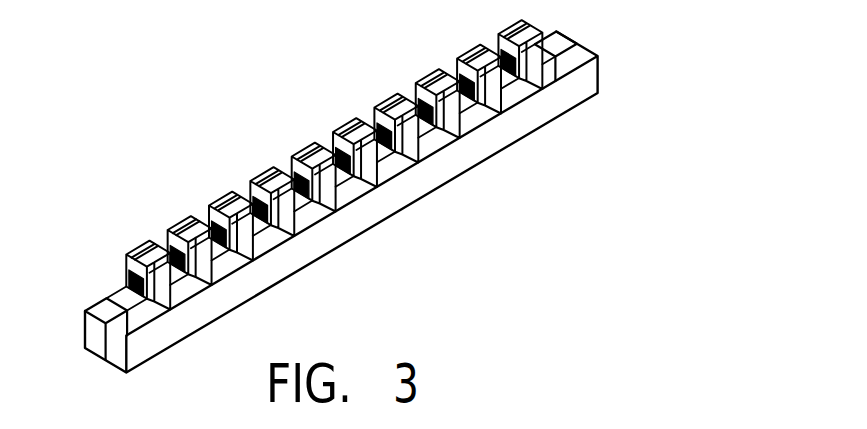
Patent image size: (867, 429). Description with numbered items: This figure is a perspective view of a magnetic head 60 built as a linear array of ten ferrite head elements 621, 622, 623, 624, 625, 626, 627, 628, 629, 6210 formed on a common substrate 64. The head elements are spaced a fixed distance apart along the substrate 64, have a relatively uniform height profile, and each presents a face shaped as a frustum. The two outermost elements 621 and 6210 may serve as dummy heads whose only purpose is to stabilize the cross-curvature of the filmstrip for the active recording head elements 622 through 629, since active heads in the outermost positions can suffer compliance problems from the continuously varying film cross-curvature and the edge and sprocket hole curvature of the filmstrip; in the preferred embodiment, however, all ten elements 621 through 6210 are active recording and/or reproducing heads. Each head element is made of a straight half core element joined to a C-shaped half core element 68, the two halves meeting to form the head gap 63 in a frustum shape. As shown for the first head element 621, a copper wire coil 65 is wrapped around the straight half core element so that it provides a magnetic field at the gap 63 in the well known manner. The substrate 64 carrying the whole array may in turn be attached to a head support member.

The magnetic head 60 is at (373, 210).
The C-shaped half core element 68 is at (162, 342).
The substrate 64 is at (98, 336).
The ferrite head element 621 is at (170, 286).
The ferrite head element 622 is at (201, 245).
The ferrite head element 623 is at (265, 251).
The ferrite head element 624 is at (306, 226).
The ferrite head element 625 is at (348, 202).
The ferrite head element 626 is at (389, 178).
The ferrite head element 627 is at (430, 154).
The ferrite head element 628 is at (472, 130).
The ferrite head element 629 is at (513, 105).
The ferrite head element 6210 is at (555, 81).
The copper wire coil 65 is at (125, 248).
The head gap 63 is at (184, 213).